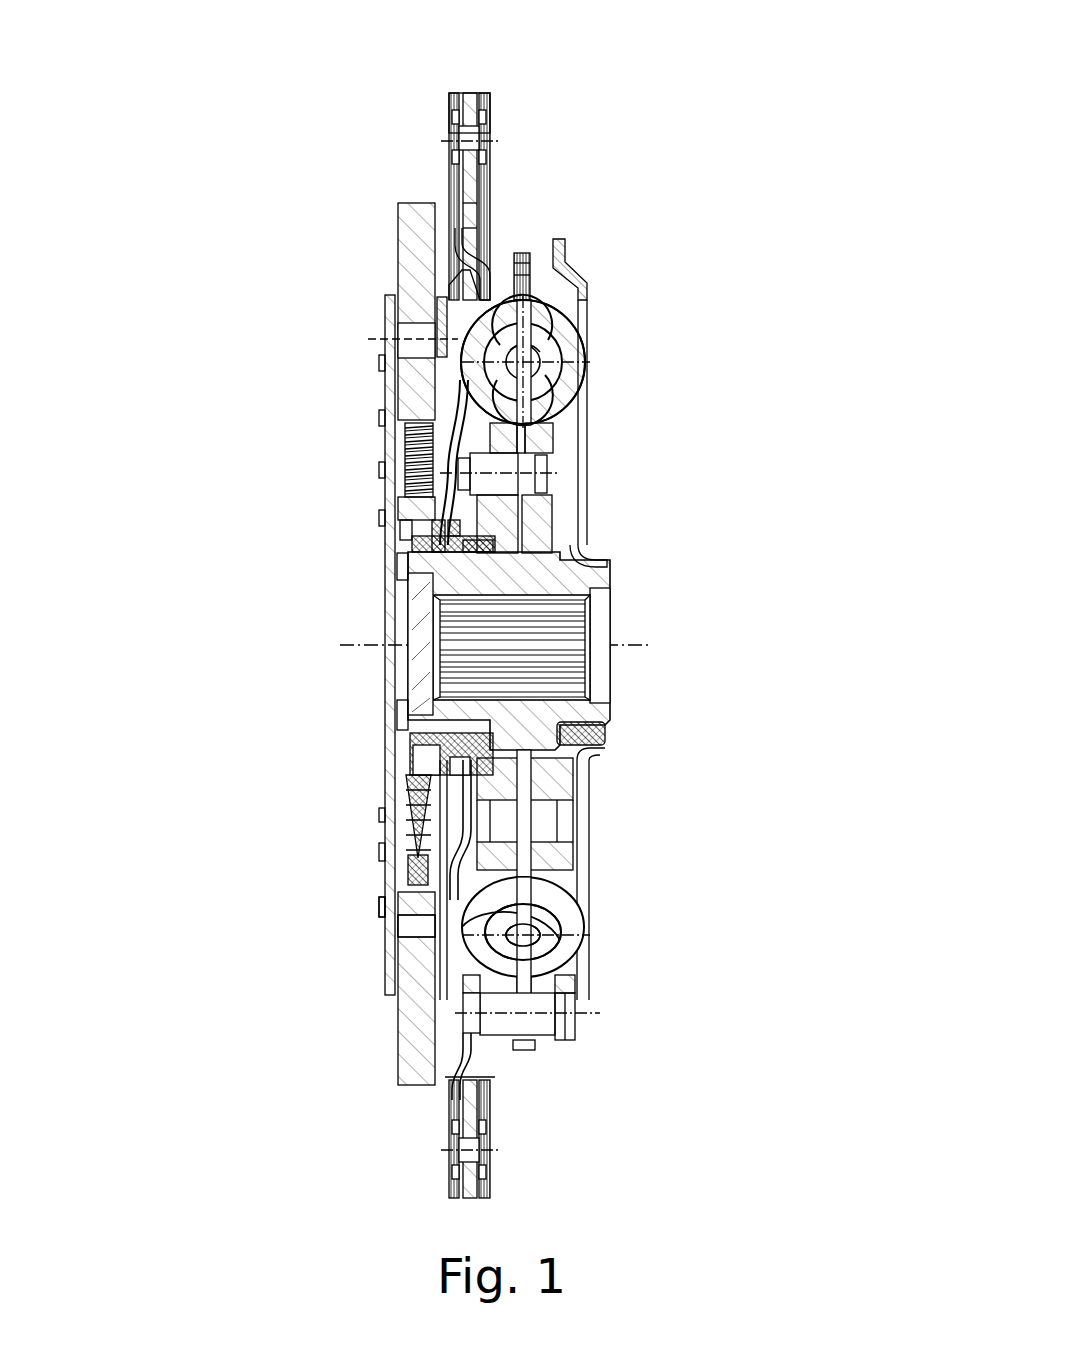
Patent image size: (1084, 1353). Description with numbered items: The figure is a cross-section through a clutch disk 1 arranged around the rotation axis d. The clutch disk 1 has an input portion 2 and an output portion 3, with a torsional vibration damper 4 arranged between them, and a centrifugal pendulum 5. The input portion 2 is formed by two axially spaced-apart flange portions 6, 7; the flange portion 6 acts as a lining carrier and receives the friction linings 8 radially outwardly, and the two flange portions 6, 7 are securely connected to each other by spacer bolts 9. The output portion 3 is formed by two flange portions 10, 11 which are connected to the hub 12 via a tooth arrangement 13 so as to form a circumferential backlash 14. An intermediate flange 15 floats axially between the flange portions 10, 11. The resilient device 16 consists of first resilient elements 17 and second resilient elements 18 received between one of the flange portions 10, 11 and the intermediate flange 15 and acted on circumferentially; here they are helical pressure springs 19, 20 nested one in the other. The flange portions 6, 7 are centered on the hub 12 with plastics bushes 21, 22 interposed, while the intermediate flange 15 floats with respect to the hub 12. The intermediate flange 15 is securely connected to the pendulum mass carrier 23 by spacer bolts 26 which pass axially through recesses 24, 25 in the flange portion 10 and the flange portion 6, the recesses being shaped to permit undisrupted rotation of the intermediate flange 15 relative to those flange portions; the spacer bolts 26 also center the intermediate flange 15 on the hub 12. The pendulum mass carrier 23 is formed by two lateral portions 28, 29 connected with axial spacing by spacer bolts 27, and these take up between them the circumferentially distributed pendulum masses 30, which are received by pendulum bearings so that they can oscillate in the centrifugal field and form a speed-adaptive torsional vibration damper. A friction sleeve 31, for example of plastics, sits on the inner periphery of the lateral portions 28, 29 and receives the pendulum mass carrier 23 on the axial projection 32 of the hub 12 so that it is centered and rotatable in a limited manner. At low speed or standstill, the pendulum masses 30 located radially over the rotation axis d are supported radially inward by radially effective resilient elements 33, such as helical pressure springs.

The clutch disk 1 is at (645, 113).
The input portion 2 is at (498, 166).
The output portion 3 is at (616, 708).
The torsional vibration damper 4 is at (618, 365).
The centrifugal pendulum 5 is at (366, 339).
The flange portion 6 is at (473, 240).
The flange portion 7 is at (562, 245).
The friction linings 8 is at (452, 93).
The spacer bolts 9 is at (547, 1023).
The flange portion 10 is at (505, 520).
The flange portion 11 is at (543, 513).
The hub 12 is at (560, 583).
The tooth arrangement 13 is at (512, 551).
The circumferential backlash 14 is at (505, 763).
The intermediate flange 15 is at (525, 862).
The resilient device 16 is at (593, 917).
The first resilient elements 17 is at (593, 342).
The second resilient elements 18 is at (471, 968).
The helical pressure spring 19 is at (563, 933).
The helical pressure spring 20 is at (562, 950).
The plastics bush 21 is at (473, 742).
The plastics bush 22 is at (590, 737).
The pendulum mass carrier 23 is at (368, 908).
The recess 24 is at (410, 435).
The recess 25 is at (545, 436).
The spacer bolts 26 is at (508, 468).
The spacer bolts 27 is at (417, 927).
The lateral portion 28 is at (390, 300).
The lateral portion 29 is at (457, 310).
The pendulum masses 30 is at (407, 250).
The friction sleeve 31 is at (420, 547).
The axial projection 32 is at (420, 722).
The radially effective resilient elements 33 is at (450, 457).
The rotation axis d is at (504, 645).